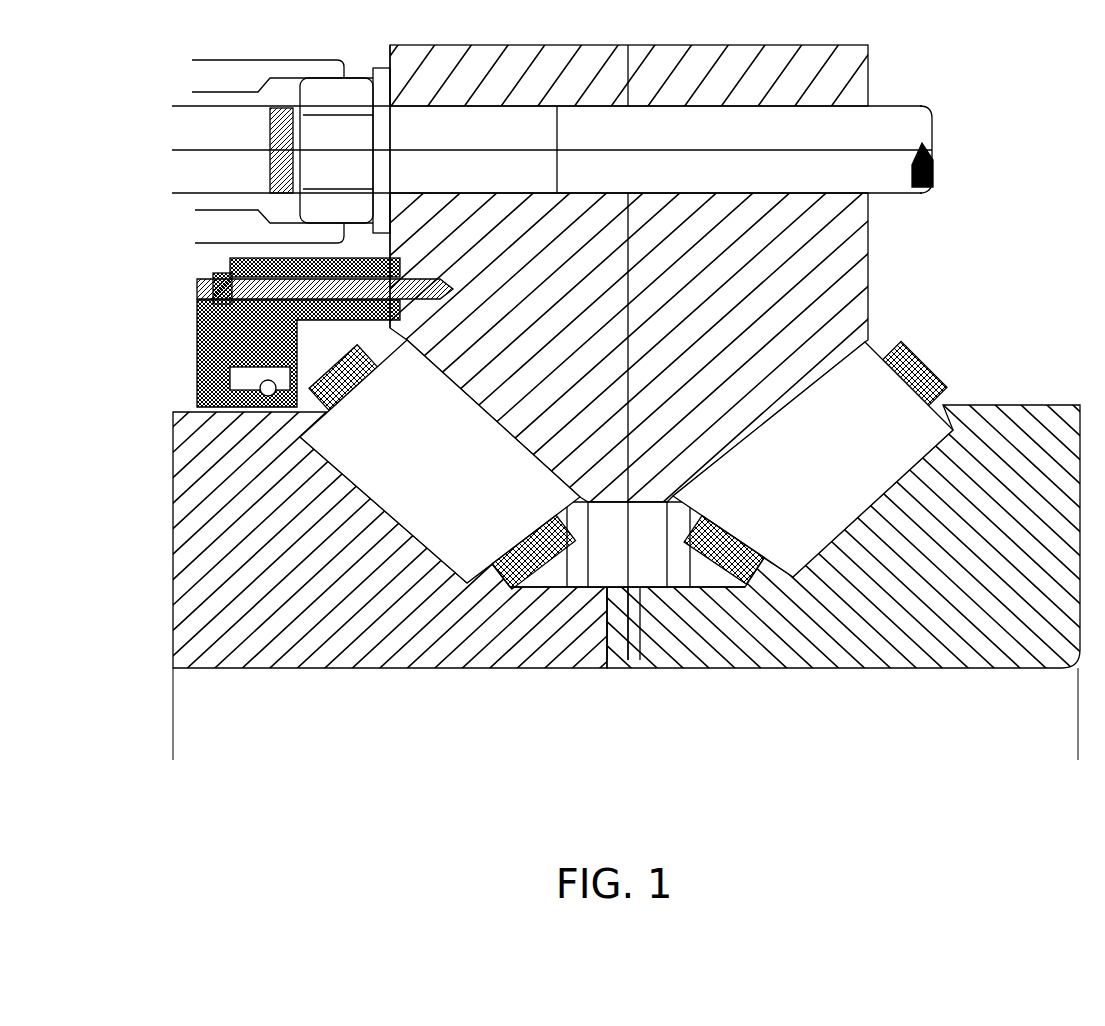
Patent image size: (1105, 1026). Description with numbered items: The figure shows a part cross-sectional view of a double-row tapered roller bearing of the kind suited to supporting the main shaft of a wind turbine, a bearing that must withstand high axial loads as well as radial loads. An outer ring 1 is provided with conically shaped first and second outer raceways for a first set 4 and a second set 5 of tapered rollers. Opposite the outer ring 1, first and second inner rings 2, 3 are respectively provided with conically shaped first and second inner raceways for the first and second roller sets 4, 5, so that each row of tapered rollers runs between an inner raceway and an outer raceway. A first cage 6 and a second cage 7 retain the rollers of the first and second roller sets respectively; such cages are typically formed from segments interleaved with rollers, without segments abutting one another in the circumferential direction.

The outer ring 1 is at (868, 244).
The first inner ring 2 is at (173, 518).
The second inner ring 3 is at (1012, 402).
The first set of tapered rollers 4 is at (470, 563).
The second set of tapered rollers 5 is at (785, 553).
The first cage 6 is at (532, 565).
The second cage 7 is at (722, 562).